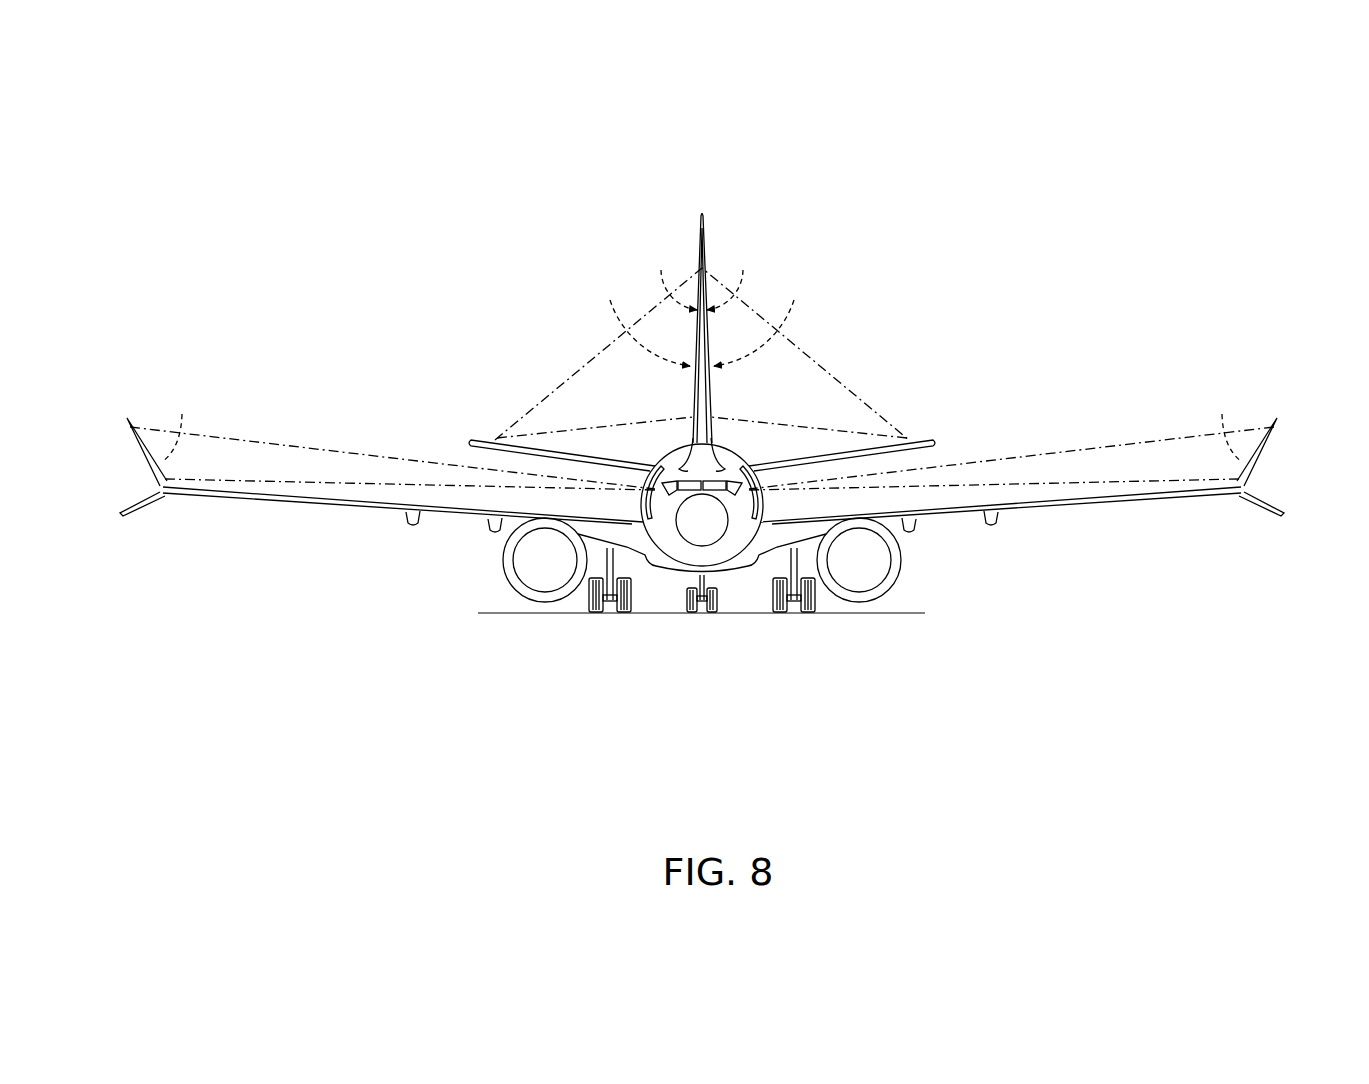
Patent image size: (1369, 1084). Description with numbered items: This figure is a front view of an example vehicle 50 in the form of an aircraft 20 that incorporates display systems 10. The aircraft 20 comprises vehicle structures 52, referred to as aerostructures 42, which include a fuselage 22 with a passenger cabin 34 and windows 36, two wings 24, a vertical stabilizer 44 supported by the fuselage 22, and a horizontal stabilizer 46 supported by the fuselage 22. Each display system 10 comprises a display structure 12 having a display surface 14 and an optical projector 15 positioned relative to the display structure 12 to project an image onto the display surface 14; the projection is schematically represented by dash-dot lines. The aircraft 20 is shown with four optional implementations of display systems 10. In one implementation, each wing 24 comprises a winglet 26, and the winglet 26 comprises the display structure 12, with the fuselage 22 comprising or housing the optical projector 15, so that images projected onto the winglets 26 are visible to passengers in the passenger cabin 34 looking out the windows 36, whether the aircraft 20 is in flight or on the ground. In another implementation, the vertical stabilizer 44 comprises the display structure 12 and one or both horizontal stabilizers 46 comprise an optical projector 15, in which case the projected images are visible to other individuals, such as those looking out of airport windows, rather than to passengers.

The display system 10 is at (327, 422).
The display structure 12 is at (145, 430).
The display surface 14 is at (702, 355).
The optical projector 15 is at (497, 438).
The aircraft 20 is at (916, 157).
The fuselage 22 is at (728, 440).
The wing 24 is at (300, 510).
The winglet 26 is at (143, 457).
The passenger cabin 34 is at (667, 447).
The windows 36 is at (681, 447).
The aerostructures 42 is at (938, 340).
The vertical stabilizer 44 is at (707, 240).
The horizontal stabilizer 46 is at (580, 452).
The vehicle 50 is at (992, 177).
The vehicle structures 52 is at (963, 260).